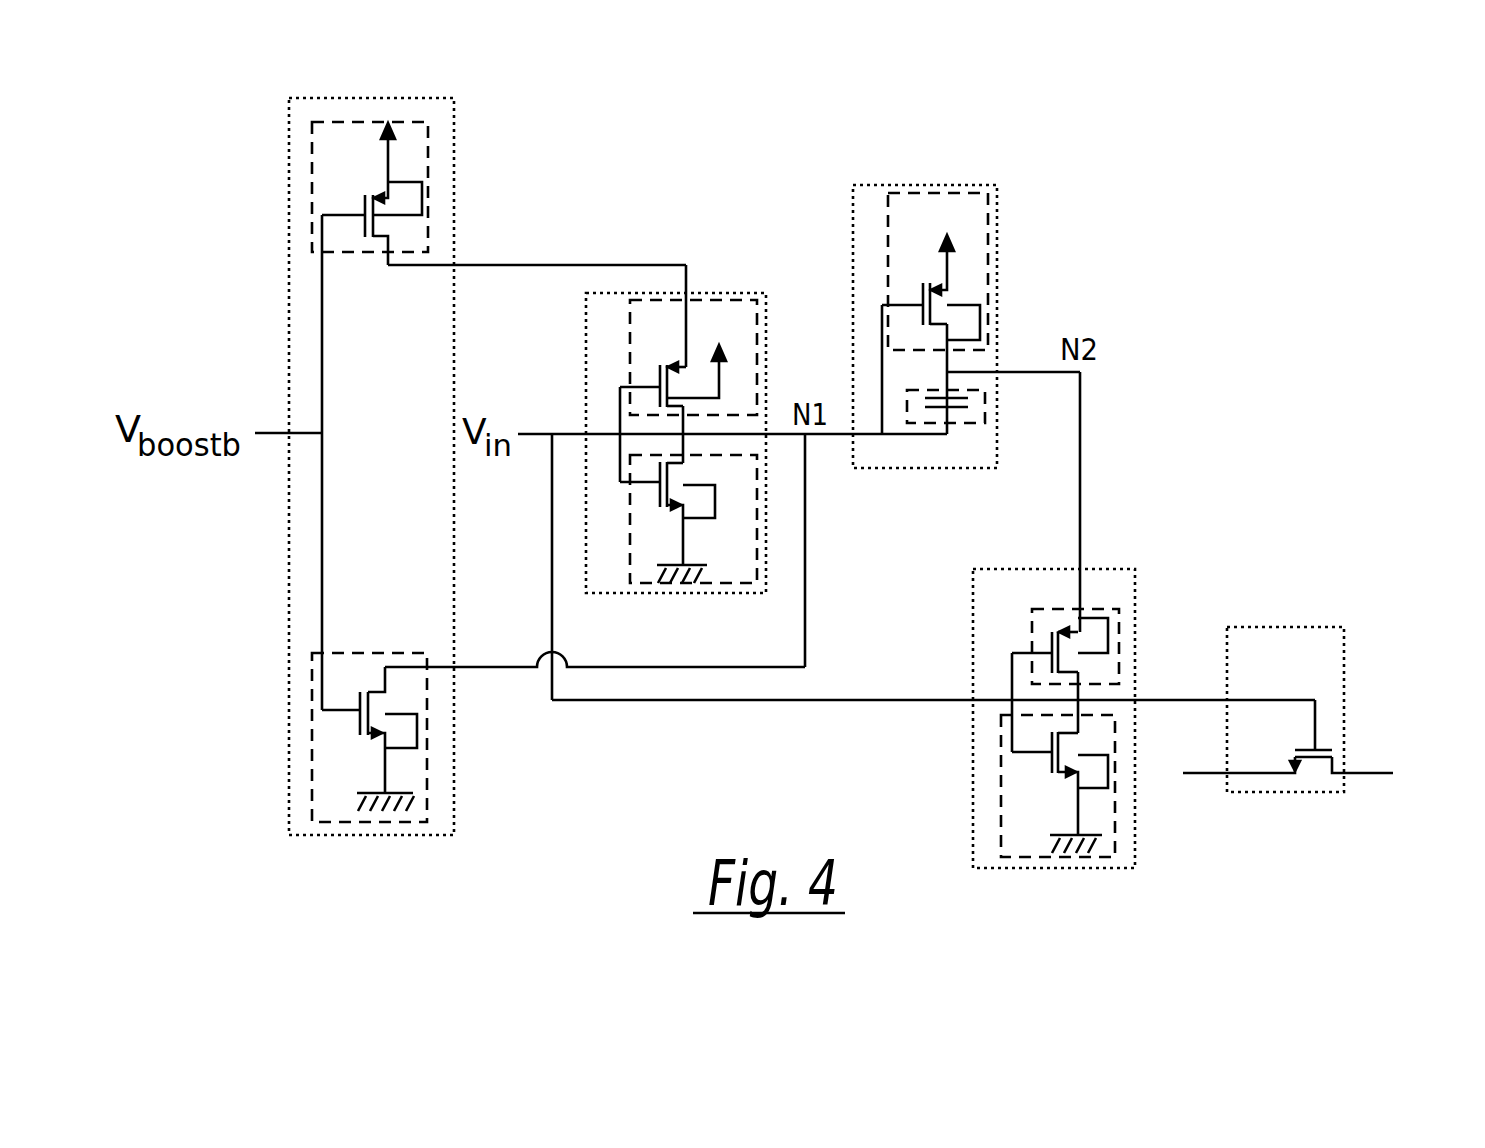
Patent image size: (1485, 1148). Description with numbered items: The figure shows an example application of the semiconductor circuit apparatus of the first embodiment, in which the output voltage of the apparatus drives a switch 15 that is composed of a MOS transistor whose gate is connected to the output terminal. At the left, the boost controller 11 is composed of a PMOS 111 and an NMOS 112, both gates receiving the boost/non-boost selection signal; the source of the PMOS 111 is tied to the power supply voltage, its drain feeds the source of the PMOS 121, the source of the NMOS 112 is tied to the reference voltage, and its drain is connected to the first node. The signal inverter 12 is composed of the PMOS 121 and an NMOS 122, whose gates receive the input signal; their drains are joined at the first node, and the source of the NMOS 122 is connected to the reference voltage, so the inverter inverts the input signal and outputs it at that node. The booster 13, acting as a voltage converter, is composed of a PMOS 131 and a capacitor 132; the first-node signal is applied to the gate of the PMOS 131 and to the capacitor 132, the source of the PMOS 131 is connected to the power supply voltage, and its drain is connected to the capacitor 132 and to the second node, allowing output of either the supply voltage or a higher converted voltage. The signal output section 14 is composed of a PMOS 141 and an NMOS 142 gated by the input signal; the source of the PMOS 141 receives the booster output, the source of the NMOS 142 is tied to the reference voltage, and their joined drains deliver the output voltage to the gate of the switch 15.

The boost controller 11 is at (456, 104).
The PMOS 111 is at (312, 163).
The NMOS 112 is at (312, 738).
The signal inverter 12 is at (703, 293).
The PMOS 121 is at (630, 315).
The NMOS 122 is at (710, 593).
The booster 13 is at (997, 220).
The PMOS 131 is at (945, 193).
The capacitor 132 is at (975, 423).
The signal output section 14 is at (1085, 569).
The PMOS 141 is at (1032, 625).
The NMOS 142 is at (1001, 775).
The switch 15 is at (1283, 627).